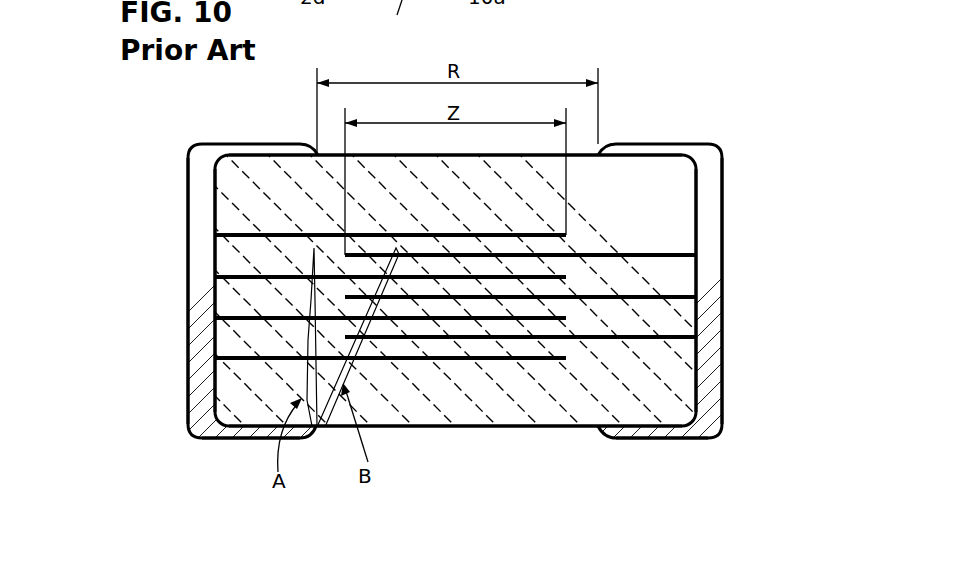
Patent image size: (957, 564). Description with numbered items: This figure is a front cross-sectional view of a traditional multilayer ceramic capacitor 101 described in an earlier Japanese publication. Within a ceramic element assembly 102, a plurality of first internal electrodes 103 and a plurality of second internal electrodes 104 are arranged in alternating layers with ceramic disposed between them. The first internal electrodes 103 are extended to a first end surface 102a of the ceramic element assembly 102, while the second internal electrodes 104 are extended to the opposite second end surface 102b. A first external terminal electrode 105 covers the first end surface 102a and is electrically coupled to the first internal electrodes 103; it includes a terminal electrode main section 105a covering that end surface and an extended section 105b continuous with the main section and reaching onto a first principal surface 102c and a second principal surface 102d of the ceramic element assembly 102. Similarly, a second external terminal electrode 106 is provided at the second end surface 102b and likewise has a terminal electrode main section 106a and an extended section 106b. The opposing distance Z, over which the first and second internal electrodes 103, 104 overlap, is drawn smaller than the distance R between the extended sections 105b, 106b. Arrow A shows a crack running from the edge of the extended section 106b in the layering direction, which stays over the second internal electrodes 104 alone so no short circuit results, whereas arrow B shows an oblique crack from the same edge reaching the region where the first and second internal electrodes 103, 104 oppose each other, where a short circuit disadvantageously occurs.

The multilayer ceramic capacitor 101 is at (221, 143).
The ceramic element assembly 102 is at (393, 429).
The first end surface 102a is at (697, 203).
The second end surface 102b is at (215, 340).
The first principal surface 102c is at (633, 147).
The second principal surface 102d is at (572, 428).
The first internal electrodes 103 is at (657, 297).
The second internal electrodes 104 is at (238, 275).
The first external terminal electrode 105 is at (708, 340).
The terminal electrode main section 105a is at (724, 353).
The extended section 105b is at (677, 438).
The second external terminal electrode 106 is at (358, 340).
The terminal electrode main section 106a is at (188, 402).
The extended section 106b is at (235, 437).